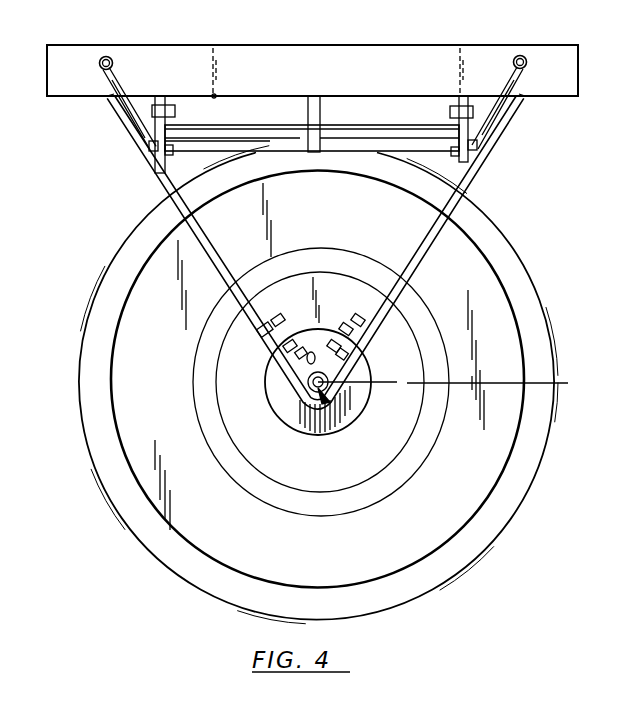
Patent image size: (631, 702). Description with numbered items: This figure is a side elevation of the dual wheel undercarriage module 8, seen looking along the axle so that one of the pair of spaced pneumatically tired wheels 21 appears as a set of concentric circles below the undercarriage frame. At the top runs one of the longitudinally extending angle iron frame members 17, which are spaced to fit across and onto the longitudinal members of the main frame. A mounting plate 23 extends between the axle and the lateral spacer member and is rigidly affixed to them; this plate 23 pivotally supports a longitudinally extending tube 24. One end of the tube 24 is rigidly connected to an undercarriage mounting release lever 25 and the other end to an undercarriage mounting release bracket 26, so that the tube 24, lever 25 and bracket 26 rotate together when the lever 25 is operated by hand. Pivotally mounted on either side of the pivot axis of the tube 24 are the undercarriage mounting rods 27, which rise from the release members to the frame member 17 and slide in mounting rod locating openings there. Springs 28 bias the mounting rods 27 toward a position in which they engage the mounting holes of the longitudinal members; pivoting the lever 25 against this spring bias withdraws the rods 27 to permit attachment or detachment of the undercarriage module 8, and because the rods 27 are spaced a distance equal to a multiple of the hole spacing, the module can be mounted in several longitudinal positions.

The undercarriage module 8 is at (504, 187).
The angle iron frame member 17 is at (576, 91).
The pneumatically tired wheel 21 is at (227, 528).
The mounting plate 23 is at (320, 111).
The tube 24 is at (449, 147).
The undercarriage mounting release lever 25 is at (156, 188).
The undercarriage mounting release bracket 26 is at (455, 125).
The undercarriage mounting rod 27 is at (148, 103).
The spring 28 is at (215, 96).